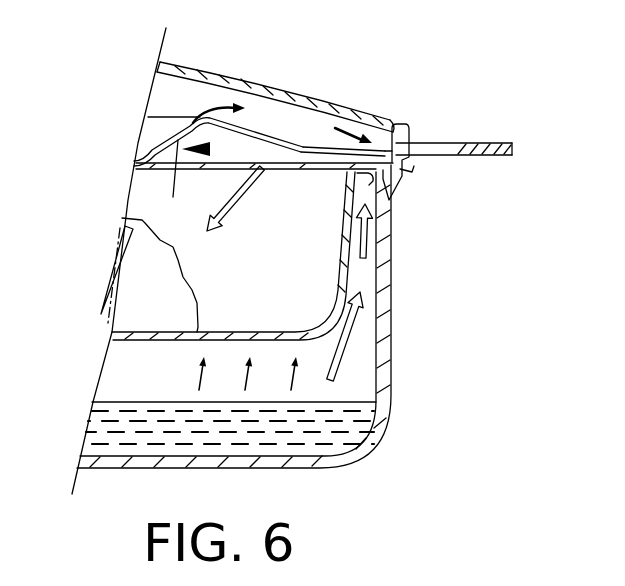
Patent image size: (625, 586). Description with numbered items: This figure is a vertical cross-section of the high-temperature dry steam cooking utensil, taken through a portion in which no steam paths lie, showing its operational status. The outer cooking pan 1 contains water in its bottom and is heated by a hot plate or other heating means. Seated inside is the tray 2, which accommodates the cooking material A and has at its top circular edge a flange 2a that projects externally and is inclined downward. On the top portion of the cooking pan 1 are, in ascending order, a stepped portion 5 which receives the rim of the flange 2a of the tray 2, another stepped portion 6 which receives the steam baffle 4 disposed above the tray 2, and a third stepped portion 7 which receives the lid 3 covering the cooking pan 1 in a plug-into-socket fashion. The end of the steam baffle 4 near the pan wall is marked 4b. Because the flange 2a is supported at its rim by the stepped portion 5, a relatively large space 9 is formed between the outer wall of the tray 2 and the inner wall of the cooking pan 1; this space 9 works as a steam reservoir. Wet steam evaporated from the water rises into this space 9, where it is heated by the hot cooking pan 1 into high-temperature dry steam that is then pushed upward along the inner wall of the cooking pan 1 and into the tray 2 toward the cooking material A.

The cooking pan 1 is at (395, 408).
The tray 2 is at (130, 350).
The flange 2a is at (393, 126).
The lid 3 is at (278, 72).
The steam baffle 4 is at (276, 87).
The bent end of guide plate 4b is at (379, 150).
The stepped portion 5 is at (390, 200).
The stepped portion 6 is at (399, 172).
The stepped portion 7 is at (413, 141).
The space 9 is at (360, 272).
The cooking material A is at (156, 305).